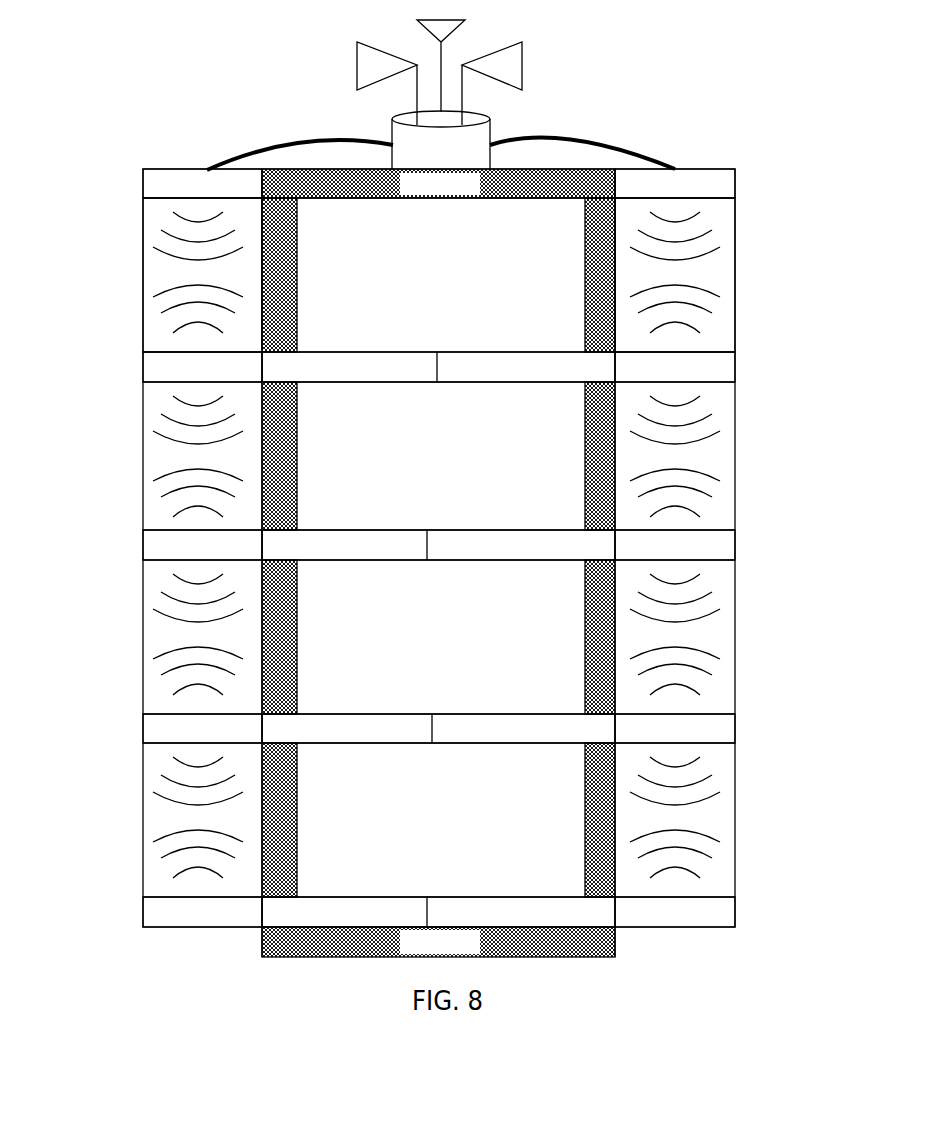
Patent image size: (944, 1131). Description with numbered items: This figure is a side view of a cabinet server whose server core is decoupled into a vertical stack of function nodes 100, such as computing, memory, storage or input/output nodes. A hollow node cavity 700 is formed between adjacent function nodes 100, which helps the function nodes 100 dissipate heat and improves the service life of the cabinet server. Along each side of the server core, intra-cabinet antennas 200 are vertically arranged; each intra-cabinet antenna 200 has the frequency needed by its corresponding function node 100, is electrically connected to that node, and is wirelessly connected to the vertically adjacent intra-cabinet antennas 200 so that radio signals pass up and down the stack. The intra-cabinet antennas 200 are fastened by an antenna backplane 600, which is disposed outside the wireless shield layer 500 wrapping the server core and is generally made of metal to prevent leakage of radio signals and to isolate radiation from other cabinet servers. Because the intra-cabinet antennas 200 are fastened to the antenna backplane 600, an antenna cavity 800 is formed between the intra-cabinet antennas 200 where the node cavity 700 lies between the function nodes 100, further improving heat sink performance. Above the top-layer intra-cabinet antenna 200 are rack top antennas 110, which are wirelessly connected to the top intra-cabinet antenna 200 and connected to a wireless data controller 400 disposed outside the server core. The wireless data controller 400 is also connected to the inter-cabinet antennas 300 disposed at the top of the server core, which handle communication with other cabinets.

The function node 100 is at (467, 352).
The rack top antenna 110 is at (155, 192).
The intra-cabinet antenna 200 is at (155, 368).
The inter-cabinet antenna 300 is at (360, 62).
The wireless data controller 400 is at (490, 135).
The wireless shield layer 500 is at (273, 173).
The antenna backplane 600 is at (143, 283).
The node cavity 700 is at (552, 457).
The antenna cavity 800 is at (717, 490).